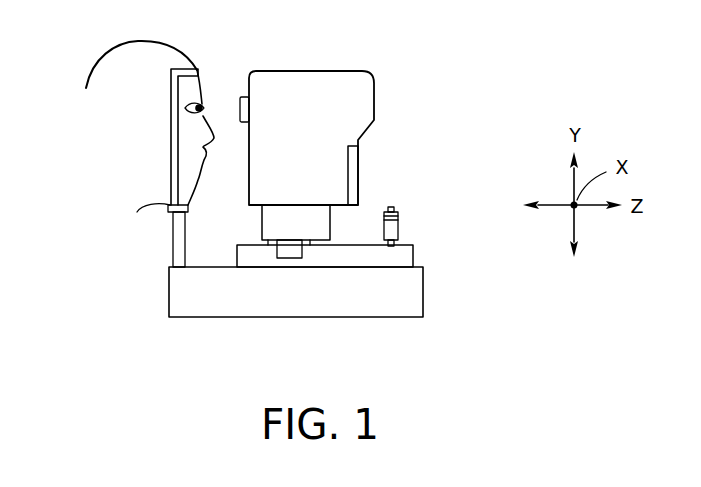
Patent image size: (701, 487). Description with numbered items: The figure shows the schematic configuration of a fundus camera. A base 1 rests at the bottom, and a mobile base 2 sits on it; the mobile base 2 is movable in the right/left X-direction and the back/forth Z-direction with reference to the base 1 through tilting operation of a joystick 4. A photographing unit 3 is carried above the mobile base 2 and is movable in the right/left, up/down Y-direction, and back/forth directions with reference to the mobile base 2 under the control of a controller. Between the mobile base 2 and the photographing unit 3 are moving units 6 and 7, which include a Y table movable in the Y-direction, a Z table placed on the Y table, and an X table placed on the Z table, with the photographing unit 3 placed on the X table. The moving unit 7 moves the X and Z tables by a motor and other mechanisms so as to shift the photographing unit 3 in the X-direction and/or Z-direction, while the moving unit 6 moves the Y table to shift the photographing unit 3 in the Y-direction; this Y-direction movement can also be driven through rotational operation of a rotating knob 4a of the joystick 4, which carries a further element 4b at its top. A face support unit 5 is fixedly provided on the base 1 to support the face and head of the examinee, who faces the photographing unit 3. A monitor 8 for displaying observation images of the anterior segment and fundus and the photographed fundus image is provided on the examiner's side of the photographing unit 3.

The base 1 is at (352, 303).
The mobile base 2 is at (405, 258).
The photographing unit 3 is at (323, 83).
The joystick 4 is at (455, 186).
The rotating knob 4a is at (398, 221).
The joystick button 4b is at (393, 208).
The face support unit 5 is at (156, 222).
The moving unit 6 is at (294, 262).
The moving unit 7 is at (316, 222).
The monitor 8 is at (353, 165).